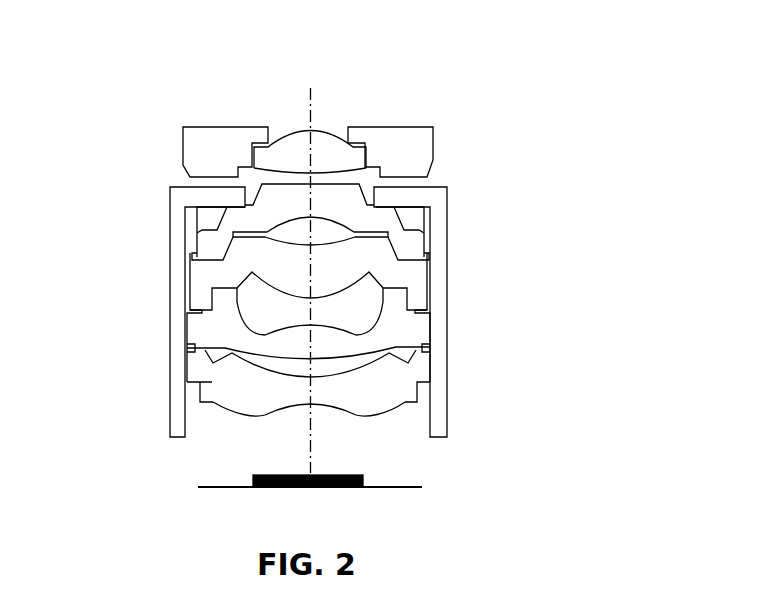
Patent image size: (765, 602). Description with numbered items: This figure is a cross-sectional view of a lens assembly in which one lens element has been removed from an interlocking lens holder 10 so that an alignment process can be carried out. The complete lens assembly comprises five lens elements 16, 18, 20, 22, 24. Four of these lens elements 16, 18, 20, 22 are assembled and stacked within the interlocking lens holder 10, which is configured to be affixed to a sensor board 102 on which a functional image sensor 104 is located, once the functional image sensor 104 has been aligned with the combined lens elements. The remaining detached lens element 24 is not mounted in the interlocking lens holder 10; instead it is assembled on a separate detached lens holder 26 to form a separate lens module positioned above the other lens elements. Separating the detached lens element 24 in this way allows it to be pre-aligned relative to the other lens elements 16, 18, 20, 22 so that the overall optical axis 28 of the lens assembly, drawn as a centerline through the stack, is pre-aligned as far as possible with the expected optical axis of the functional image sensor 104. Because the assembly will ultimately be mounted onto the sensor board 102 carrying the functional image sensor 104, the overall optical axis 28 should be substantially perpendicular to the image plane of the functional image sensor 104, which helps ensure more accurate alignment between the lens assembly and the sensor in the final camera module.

The interlocking lens holder 10 is at (438, 302).
The lens element 16 is at (213, 383).
The lens element 18 is at (203, 328).
The lens element 20 is at (203, 278).
The lens element 22 is at (210, 242).
The detached lens element 24 is at (325, 140).
The detached lens holder 26 is at (412, 148).
The overall optical axis 28 is at (309, 88).
The sensor board 102 is at (407, 485).
The functional image sensor 104 is at (283, 488).